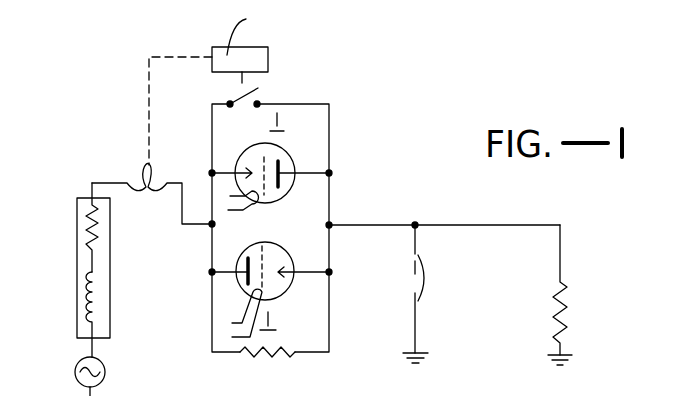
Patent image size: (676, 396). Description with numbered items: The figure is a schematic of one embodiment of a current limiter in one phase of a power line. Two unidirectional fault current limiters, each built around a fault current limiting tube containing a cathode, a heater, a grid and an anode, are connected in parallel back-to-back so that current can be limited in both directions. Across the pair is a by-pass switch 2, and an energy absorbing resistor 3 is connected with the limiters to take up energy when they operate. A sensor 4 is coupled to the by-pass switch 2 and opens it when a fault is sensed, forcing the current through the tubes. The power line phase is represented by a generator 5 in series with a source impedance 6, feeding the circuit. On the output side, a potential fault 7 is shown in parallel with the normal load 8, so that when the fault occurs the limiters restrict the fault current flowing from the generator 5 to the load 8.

The by-pass switch 2 is at (262, 93).
The energy absorbing resistor 3 is at (270, 360).
The sensor 4 is at (262, 63).
The generator 5 is at (105, 373).
The source impedance 6 is at (75, 277).
The potential fault 7 is at (427, 281).
The normal load 8 is at (563, 325).